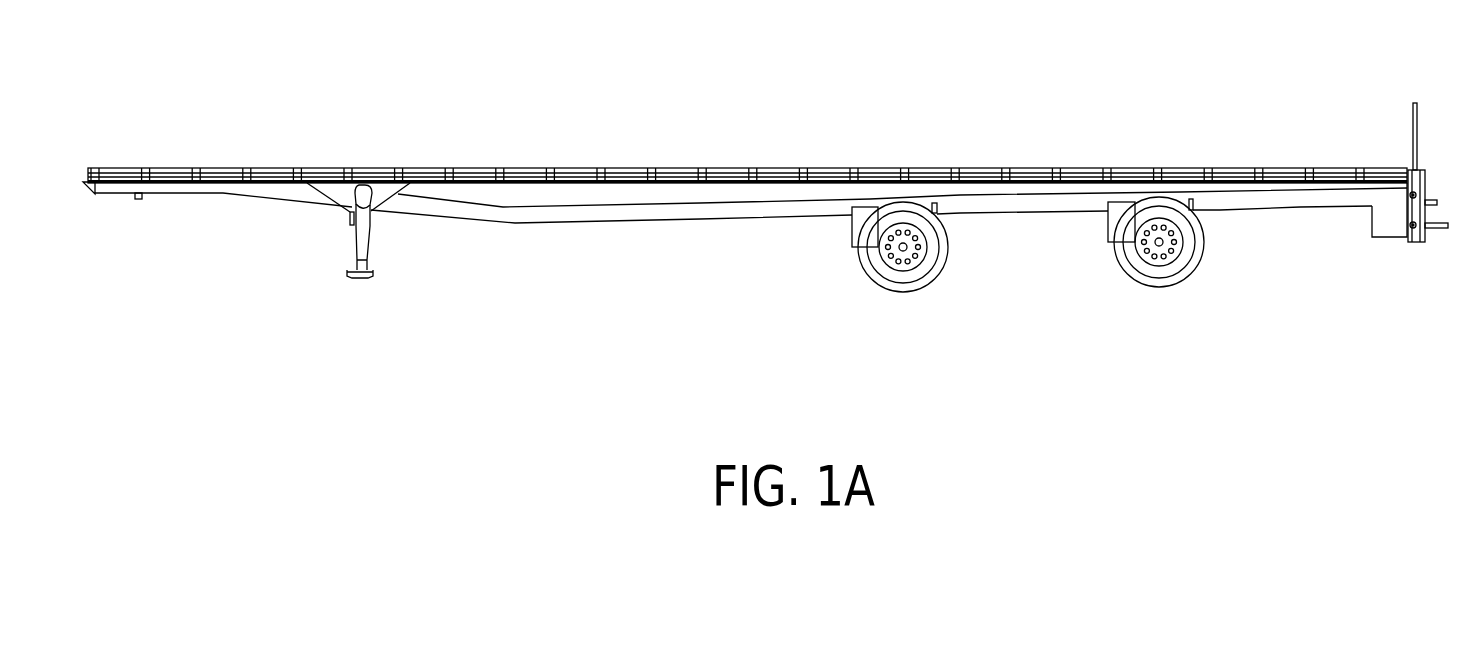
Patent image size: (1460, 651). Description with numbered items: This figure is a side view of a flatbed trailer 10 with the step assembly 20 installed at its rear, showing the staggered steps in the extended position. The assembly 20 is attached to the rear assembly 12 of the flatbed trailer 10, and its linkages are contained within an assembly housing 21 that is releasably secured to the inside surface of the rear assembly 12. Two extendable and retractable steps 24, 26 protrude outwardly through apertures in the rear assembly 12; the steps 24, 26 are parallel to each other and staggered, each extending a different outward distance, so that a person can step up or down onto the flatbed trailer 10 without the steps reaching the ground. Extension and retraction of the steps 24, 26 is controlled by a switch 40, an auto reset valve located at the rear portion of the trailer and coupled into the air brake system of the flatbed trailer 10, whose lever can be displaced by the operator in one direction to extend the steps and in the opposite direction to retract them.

The flatbed trailer 10 is at (768, 208).
The switch 40 is at (1385, 158).
The step 24 is at (1437, 188).
The assembly housing 21 is at (1370, 218).
The assembly 20 is at (1393, 214).
The rear assembly 12 is at (1417, 248).
The step 26 is at (1439, 246).